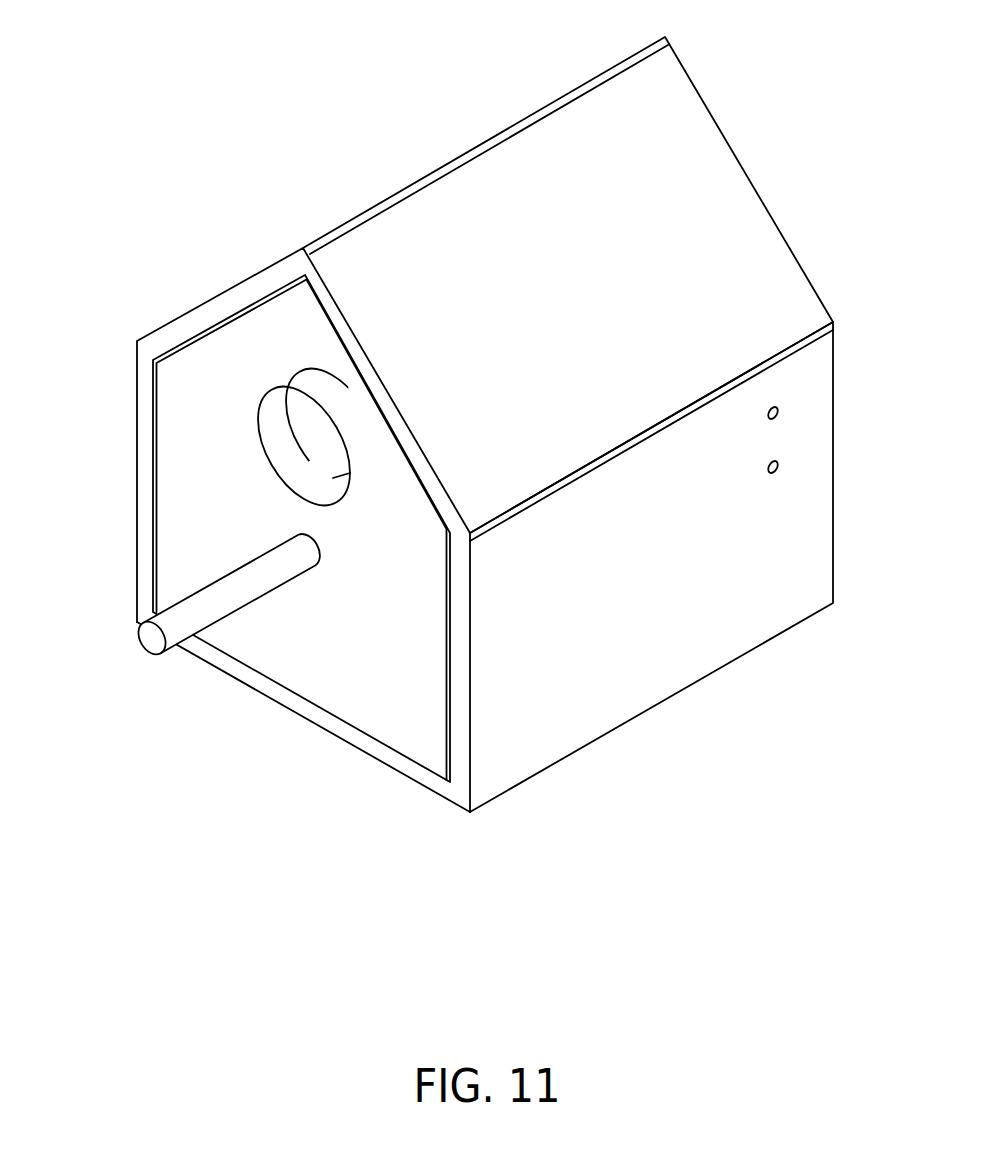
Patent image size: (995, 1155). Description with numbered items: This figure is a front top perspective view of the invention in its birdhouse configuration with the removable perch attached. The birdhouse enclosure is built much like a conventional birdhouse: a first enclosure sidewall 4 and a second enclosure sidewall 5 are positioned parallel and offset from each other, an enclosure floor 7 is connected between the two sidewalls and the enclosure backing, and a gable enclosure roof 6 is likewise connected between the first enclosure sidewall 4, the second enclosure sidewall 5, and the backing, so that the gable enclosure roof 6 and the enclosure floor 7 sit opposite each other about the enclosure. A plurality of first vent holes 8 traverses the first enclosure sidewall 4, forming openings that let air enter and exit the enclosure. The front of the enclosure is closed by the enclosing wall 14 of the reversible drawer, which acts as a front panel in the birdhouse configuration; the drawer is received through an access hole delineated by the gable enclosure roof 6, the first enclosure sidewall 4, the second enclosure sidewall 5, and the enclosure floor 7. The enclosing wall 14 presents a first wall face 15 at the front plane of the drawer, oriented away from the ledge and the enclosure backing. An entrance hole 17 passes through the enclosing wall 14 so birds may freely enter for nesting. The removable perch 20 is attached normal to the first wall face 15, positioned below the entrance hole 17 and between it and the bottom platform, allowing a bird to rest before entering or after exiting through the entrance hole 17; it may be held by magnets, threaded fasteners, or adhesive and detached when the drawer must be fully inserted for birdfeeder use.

The first enclosure sidewall 4 is at (693, 665).
The second enclosure sidewall 5 is at (140, 556).
The gable enclosure roof 6 is at (745, 200).
The enclosure floor 7 is at (360, 740).
The plurality of first vent holes 8 is at (767, 422).
The enclosing wall 14 is at (303, 675).
The first wall face 15 is at (373, 649).
The entrance hole 17 is at (298, 469).
The removable perch 20 is at (273, 561).